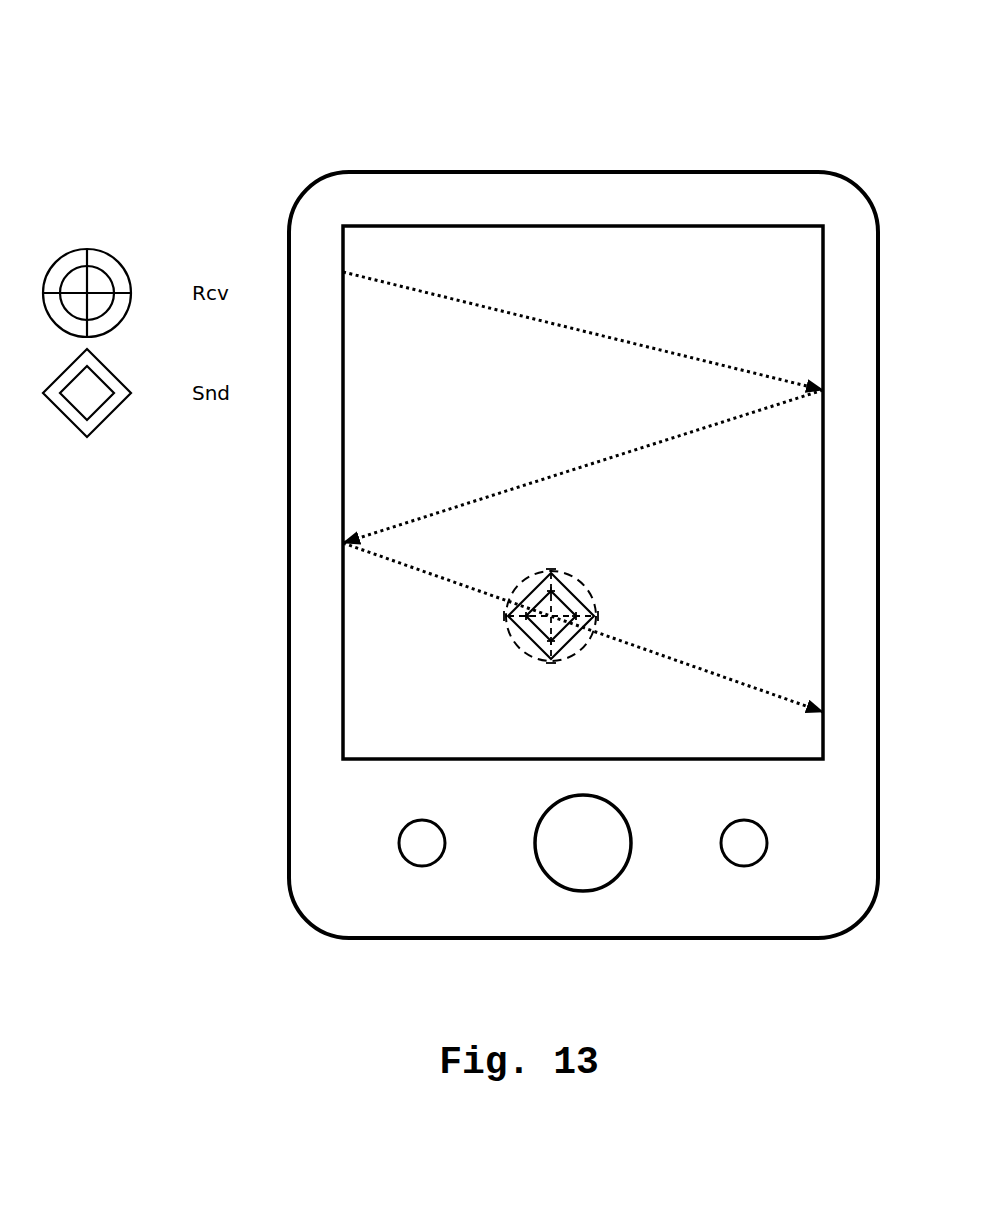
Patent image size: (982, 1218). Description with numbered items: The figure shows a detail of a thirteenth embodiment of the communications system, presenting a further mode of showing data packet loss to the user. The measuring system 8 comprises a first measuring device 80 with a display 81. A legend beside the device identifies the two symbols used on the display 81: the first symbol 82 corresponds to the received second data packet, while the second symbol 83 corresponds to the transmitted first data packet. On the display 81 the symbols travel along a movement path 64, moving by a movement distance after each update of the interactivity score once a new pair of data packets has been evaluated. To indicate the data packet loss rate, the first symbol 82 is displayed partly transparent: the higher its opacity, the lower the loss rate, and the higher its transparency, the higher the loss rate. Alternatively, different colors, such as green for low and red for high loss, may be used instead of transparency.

The measuring system 8 is at (583, 476).
The first measuring device 80 is at (783, 172).
The display 81 is at (707, 226).
The first symbol 82 is at (110, 218).
The second symbol 83 is at (107, 457).
The movement path 64 is at (587, 485).